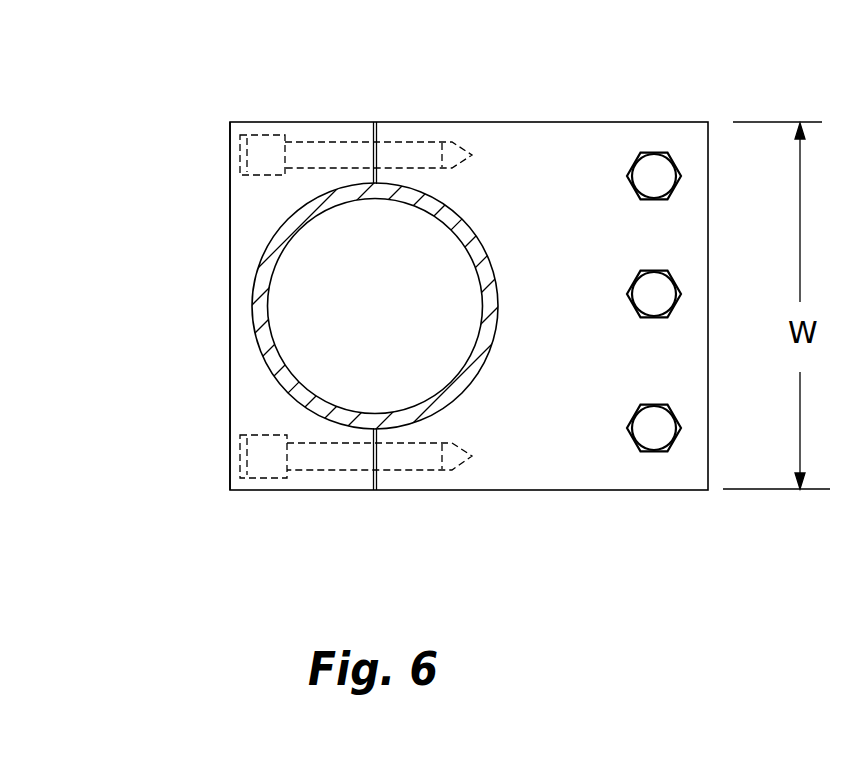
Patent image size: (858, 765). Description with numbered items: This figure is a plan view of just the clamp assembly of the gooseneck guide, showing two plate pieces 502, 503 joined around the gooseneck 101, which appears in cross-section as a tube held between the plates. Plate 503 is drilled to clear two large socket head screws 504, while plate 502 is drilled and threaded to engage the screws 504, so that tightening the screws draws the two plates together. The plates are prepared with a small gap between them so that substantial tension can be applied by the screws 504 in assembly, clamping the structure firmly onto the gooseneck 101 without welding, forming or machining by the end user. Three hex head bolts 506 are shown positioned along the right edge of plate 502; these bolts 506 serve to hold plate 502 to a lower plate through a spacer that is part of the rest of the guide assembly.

The gooseneck 101 is at (460, 232).
The plate 502 is at (502, 122).
The plate 503 is at (229, 297).
The socket head screw 504 is at (268, 150).
The hex head bolt 506 is at (658, 160).